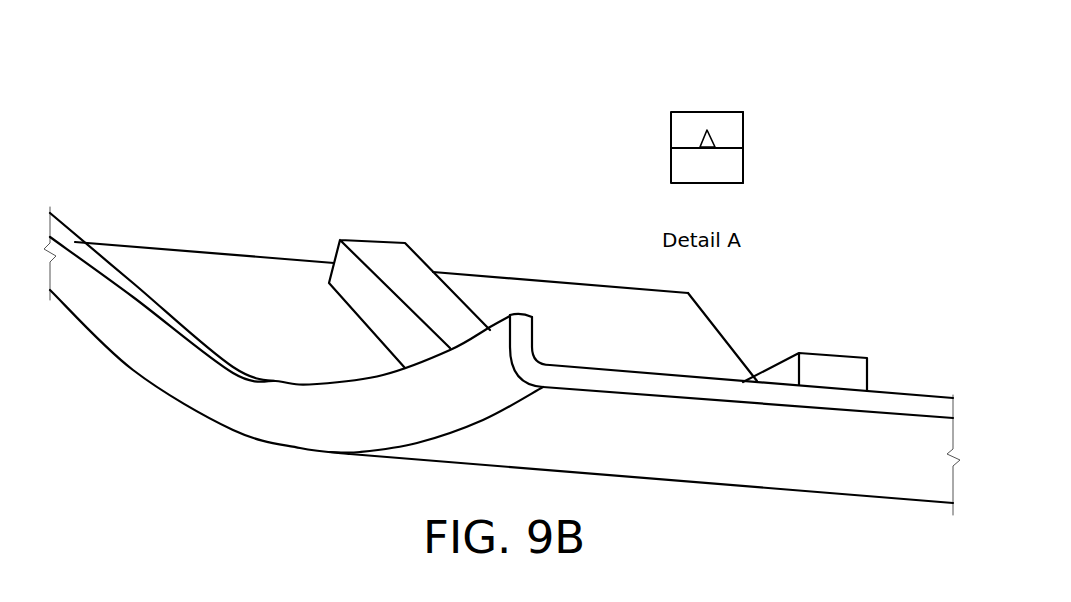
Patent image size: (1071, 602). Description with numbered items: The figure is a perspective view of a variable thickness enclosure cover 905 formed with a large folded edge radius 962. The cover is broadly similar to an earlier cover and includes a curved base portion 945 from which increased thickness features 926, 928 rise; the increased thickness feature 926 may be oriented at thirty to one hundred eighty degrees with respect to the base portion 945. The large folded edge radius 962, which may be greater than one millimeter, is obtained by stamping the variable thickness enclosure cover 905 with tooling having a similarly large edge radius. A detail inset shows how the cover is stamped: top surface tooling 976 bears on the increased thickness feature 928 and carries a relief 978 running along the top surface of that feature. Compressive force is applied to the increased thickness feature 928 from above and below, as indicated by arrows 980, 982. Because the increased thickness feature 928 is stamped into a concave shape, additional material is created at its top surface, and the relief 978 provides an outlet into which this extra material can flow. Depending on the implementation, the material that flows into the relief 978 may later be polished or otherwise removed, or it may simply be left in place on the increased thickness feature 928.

The variable thickness enclosure cover 905 is at (512, 198).
The increased thickness feature 926 is at (110, 290).
The increased thickness feature 928 is at (393, 262).
The curved base portion 945 is at (270, 317).
The large folded edge radius 962 is at (402, 408).
The top surface tooling 976 is at (743, 133).
The relief 978 is at (703, 137).
The arrow 980 is at (707, 222).
The arrow 982 is at (705, 105).